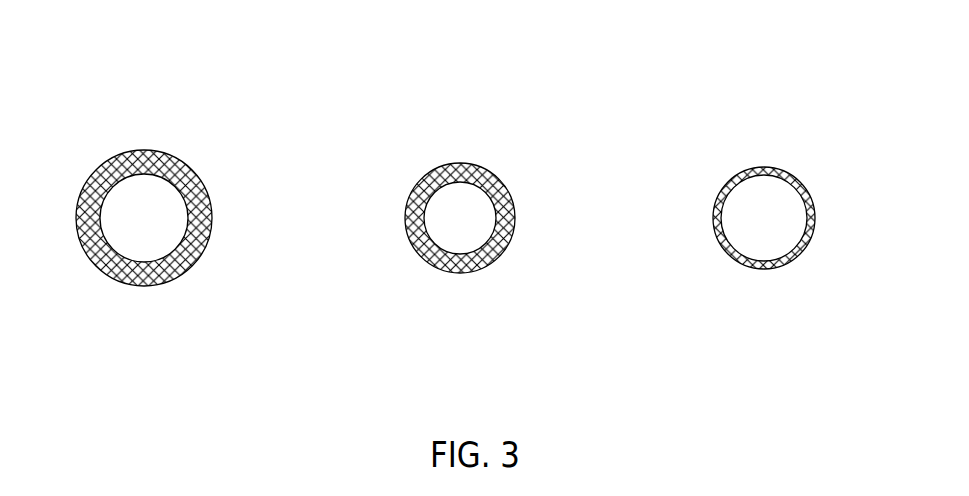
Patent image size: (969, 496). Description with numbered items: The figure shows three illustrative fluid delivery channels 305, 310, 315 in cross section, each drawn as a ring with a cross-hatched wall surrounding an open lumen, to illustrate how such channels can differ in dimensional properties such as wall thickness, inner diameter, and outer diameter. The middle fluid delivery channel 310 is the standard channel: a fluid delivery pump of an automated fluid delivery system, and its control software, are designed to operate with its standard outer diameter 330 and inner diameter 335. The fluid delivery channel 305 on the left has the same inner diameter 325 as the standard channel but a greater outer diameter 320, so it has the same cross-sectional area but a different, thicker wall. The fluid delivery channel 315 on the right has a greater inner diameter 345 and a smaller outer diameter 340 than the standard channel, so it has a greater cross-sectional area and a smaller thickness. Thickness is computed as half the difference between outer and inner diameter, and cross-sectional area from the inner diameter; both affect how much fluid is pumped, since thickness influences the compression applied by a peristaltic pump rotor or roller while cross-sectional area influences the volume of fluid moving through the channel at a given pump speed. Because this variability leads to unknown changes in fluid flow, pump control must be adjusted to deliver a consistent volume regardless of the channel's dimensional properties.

The fluid delivery channel 305 is at (186, 112).
The fluid delivery channel 310 is at (496, 112).
The fluid delivery channel 315 is at (796, 112).
The outer diameter 320 is at (188, 175).
The inner diameter 325 is at (110, 248).
The outer diameter 330 is at (495, 182).
The inner diameter 335 is at (435, 247).
The outer diameter 340 is at (802, 183).
The inner diameter 345 is at (733, 250).